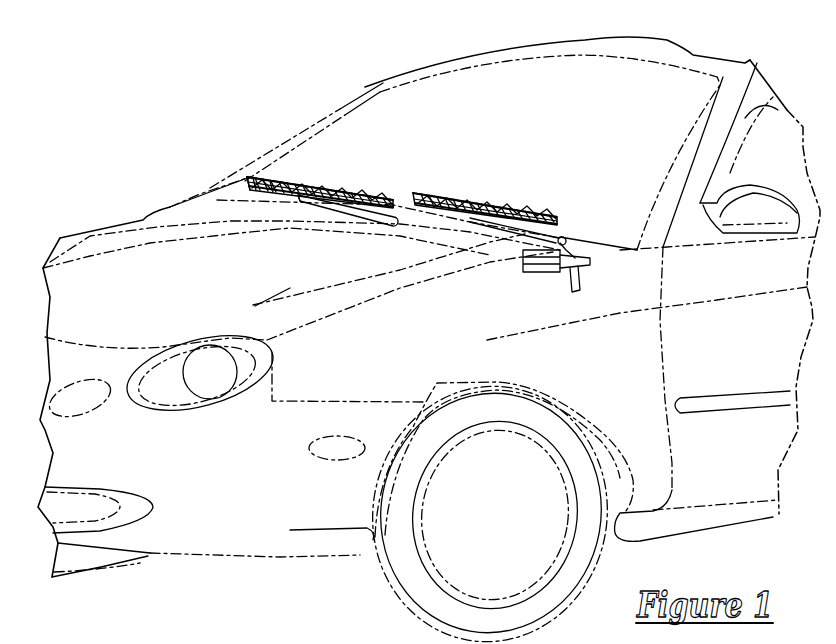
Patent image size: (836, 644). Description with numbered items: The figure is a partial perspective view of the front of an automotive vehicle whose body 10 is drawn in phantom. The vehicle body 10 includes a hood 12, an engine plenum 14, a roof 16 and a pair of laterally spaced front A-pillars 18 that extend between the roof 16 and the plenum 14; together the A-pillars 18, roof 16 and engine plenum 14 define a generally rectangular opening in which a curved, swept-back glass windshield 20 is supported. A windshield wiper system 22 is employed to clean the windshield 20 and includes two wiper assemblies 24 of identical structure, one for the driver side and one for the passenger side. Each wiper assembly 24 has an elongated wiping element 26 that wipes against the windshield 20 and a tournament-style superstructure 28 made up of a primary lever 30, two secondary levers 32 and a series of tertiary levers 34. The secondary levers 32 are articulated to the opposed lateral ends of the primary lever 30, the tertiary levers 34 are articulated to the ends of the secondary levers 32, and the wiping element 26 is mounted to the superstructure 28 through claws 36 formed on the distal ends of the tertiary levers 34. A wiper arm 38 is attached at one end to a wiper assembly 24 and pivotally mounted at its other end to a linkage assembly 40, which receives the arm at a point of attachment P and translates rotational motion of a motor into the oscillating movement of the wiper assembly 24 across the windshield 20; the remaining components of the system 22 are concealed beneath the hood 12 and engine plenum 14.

The vehicle body 10 is at (122, 112).
The hood 12 is at (98, 298).
The engine plenum 14 is at (167, 210).
The roof 16 is at (580, 60).
The A-pillars 18 is at (360, 90).
The windshield 20 is at (443, 93).
The windshield wiper system 22 is at (248, 158).
The wiper assembly 24 is at (277, 209).
The wiping element 26 is at (337, 181).
The superstructure 28 is at (248, 192).
The primary lever 30 is at (298, 196).
The secondary levers 32 is at (273, 190).
The tertiary levers 34 is at (253, 187).
The claws 36 is at (413, 195).
The wiper arm 38 is at (362, 216).
The linkage assembly 40 is at (518, 280).
The point of attachment P is at (567, 240).